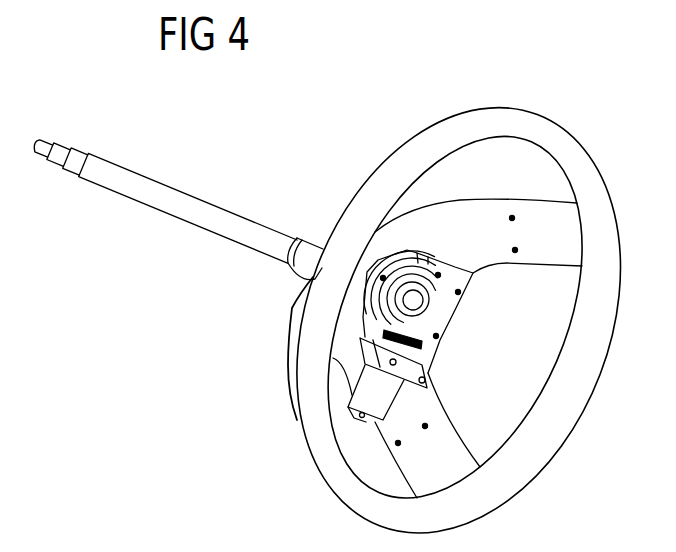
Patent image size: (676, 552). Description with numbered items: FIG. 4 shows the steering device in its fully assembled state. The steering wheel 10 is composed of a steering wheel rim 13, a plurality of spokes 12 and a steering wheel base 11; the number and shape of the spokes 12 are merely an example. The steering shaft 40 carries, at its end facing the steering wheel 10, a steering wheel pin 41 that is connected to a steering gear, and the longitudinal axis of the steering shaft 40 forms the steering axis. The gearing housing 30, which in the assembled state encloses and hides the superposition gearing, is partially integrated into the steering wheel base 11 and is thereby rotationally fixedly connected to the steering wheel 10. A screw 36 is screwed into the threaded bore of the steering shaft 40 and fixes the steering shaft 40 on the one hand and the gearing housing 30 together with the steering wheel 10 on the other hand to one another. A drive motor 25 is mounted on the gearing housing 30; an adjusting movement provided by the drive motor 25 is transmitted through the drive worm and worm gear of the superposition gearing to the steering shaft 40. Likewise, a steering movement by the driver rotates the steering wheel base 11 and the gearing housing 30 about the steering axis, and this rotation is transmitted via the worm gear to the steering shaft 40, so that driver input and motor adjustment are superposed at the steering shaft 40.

The steering wheel 10 is at (585, 125).
The steering wheel base 11 is at (353, 323).
The spokes 12 is at (543, 247).
The steering wheel rim 13 is at (592, 178).
The drive motor 25 is at (365, 395).
The gearing housing 30 is at (445, 334).
The screw 36 is at (413, 300).
The steering shaft 40 is at (200, 197).
The steering wheel pin 41 is at (310, 257).